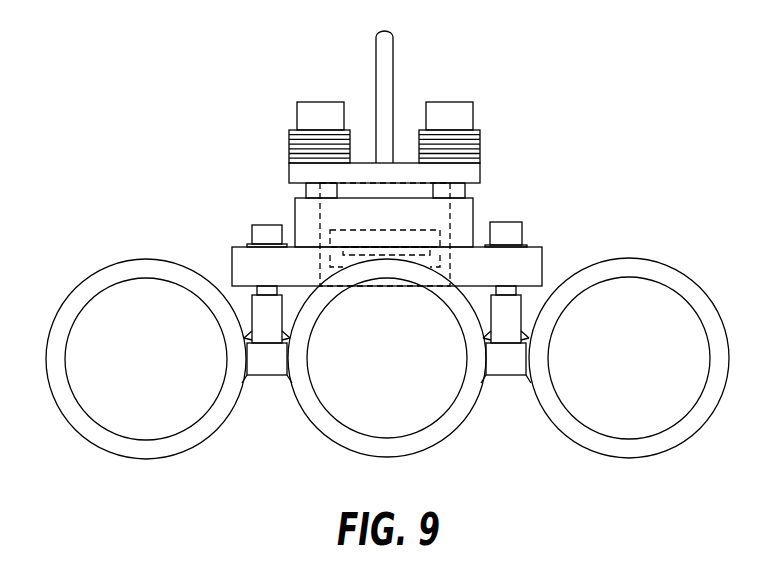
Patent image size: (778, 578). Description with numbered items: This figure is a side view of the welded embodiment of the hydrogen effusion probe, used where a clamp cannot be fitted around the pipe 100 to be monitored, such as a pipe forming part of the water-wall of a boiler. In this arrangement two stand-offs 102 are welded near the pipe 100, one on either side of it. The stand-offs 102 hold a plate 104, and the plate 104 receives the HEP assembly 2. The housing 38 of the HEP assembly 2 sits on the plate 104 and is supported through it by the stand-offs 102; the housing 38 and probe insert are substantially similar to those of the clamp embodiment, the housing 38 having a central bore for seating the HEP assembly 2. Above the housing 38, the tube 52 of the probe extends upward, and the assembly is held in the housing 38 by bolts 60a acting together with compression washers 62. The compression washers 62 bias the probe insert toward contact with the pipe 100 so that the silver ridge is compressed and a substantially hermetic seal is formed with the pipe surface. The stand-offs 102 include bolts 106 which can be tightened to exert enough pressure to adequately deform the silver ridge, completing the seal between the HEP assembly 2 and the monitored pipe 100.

The HEP assembly 2 is at (568, 125).
The housing 38 is at (478, 210).
The rod 52 is at (390, 75).
The block 60a is at (300, 118).
The compression washers 62 is at (282, 128).
The pipe 100 is at (437, 437).
The stand-offs 102 is at (250, 310).
The plate 104 is at (518, 285).
The bolts 106 is at (255, 222).